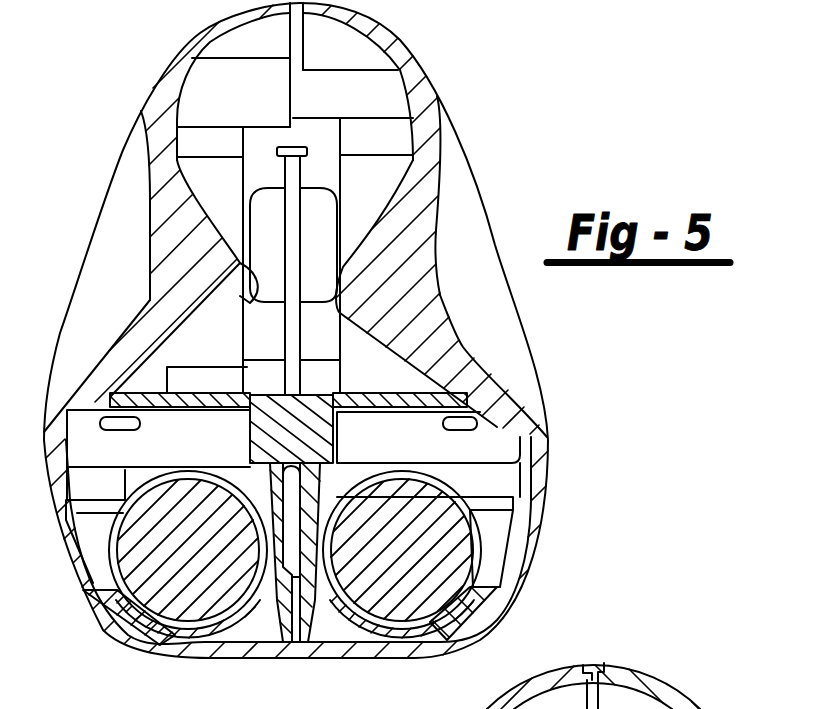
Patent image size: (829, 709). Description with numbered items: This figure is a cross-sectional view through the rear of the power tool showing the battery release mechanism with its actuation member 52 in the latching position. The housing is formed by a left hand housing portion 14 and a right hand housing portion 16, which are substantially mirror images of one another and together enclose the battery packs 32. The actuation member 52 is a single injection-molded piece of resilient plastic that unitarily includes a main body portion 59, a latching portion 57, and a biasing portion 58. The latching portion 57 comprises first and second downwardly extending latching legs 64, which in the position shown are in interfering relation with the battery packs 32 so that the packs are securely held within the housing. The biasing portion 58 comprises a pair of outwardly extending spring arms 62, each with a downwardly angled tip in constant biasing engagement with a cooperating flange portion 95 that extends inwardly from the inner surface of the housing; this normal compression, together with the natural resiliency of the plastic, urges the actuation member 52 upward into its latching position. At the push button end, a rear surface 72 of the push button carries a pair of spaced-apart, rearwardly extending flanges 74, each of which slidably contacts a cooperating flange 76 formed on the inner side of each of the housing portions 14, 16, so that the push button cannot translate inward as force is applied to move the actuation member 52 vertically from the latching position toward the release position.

The left hand housing portion 14 is at (163, 88).
The right hand housing portion 16 is at (447, 147).
The battery packs 32 is at (447, 557).
The actuation member 52 is at (340, 453).
The latching portion 57 is at (217, 647).
The biasing portion 58 is at (170, 390).
The main body portion 59 is at (318, 164).
The spring arms 62 is at (440, 375).
The latching legs 64 is at (323, 600).
The rear surface 72 is at (333, 175).
The flanges 74 is at (250, 215).
The cooperating flange 76 is at (240, 288).
The flange portions 95 is at (523, 433).